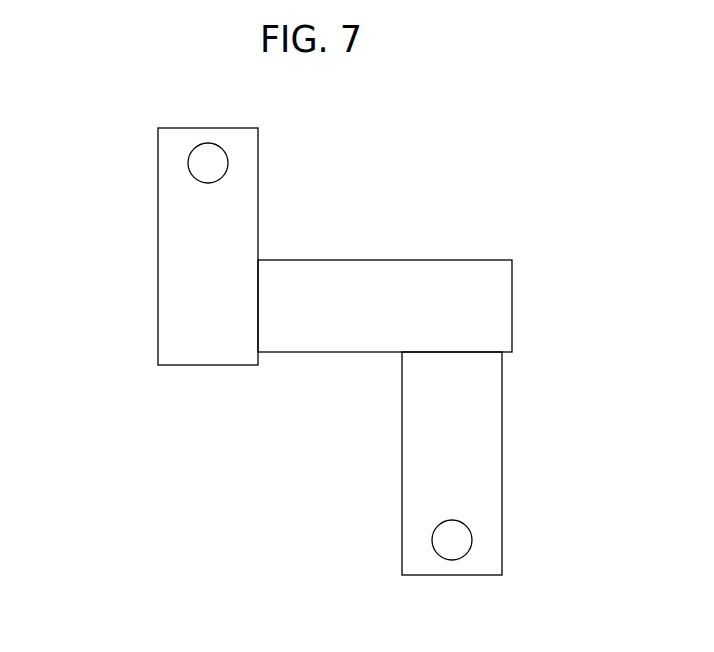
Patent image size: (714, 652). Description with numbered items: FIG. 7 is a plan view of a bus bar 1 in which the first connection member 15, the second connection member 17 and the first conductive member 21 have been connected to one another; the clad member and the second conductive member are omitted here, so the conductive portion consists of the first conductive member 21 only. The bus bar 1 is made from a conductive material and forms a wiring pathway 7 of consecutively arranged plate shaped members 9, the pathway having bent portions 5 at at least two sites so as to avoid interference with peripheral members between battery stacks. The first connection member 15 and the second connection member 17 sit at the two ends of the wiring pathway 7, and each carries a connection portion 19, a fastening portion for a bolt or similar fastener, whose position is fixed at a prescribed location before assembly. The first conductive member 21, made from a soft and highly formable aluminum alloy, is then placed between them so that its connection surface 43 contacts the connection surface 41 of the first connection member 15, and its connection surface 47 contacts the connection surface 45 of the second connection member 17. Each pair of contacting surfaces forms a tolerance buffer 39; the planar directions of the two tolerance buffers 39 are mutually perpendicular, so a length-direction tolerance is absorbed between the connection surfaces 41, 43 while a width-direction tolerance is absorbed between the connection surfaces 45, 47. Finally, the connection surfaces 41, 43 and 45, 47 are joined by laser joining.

The bus bar 1 is at (497, 130).
The bent portion 5 is at (258, 252).
The wiring pathway 7 is at (261, 508).
The plate shaped member 9 is at (250, 194).
The first connection member 15 is at (176, 216).
The second connection member 17 is at (428, 480).
The connection portion 19 is at (194, 174).
The first conductive member 21 is at (397, 280).
The tolerance buffer 39 is at (260, 358).
The connection surface 41 is at (258, 305).
The connection surface 43 is at (258, 328).
The connection surface 45 is at (468, 350).
The connection surface 47 is at (447, 352).